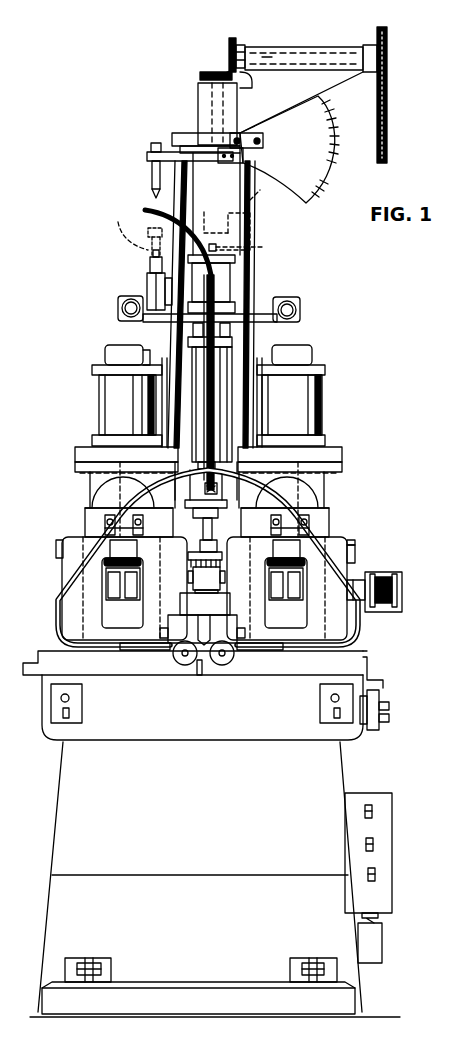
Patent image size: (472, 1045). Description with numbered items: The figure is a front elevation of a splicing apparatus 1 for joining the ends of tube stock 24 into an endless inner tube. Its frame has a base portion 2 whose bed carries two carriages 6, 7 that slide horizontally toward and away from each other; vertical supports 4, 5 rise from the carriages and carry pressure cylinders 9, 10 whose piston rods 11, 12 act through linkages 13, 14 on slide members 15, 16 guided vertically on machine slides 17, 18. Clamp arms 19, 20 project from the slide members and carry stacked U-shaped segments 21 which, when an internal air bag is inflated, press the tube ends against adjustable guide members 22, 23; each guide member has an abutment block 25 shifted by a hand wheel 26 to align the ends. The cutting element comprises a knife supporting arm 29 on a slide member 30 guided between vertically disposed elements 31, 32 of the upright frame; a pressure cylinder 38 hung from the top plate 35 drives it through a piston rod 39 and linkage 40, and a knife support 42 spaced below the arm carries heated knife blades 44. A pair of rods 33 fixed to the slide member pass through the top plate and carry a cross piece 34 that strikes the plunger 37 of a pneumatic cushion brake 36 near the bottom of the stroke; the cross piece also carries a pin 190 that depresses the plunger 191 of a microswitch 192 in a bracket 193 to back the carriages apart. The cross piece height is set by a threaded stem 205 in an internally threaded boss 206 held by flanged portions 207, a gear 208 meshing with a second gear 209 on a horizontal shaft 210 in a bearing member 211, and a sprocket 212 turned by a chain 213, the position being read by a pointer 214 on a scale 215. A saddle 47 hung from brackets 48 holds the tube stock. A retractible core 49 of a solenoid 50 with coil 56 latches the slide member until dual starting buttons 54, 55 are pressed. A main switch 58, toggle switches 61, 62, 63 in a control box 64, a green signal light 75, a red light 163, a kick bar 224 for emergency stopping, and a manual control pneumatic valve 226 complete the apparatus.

The splicing apparatus 1 is at (357, 766).
The base portion 2 is at (356, 981).
The vertical support 4 is at (324, 483).
The vertical support 5 is at (90, 483).
The carriage 6 is at (364, 657).
The carriage 7 is at (40, 652).
The pressure cylinder 9 is at (325, 395).
The pressure cylinder 10 is at (99, 392).
The piston rod 11 is at (300, 500).
The piston rod 12 is at (110, 501).
The linkage 13 is at (310, 522).
The linkage 14 is at (105, 522).
The slide member 15 is at (352, 560).
The slide member 16 is at (62, 569).
The machine slide 17 is at (335, 537).
The machine slide 18 is at (78, 537).
The clamp arm 19 is at (230, 597).
The clamp arm 20 is at (178, 596).
The segments 21 is at (202, 616).
The guide member 22 is at (234, 656).
The guide member 23 is at (176, 650).
The tube stock 24 is at (58, 608).
The abutment block 25 is at (140, 650).
The hand wheel 26 is at (185, 656).
The knife supporting arm 29 is at (222, 556).
The slide member 30 is at (250, 352).
The vertically disposed element 31 is at (272, 352).
The vertically disposed element 32 is at (148, 350).
The vertically extending rods 33 is at (252, 232).
The cross piece 34 is at (147, 156).
The top plate 35 is at (262, 314).
The pneumatic cushion brake 36 is at (228, 282).
The plunger 37 is at (265, 247).
The pressure cylinder 38 is at (218, 396).
The piston rod 39 is at (196, 508).
The linkage 40 is at (214, 515).
The knife support 42 is at (193, 575).
The knife blades 44 is at (195, 591).
The saddle 47 is at (265, 482).
The brackets 48 is at (168, 432).
The retractible core 49 is at (362, 582).
The solenoid 50 is at (398, 573).
The starting button 54 is at (332, 700).
The starting button 55 is at (70, 699).
The coil 56 is at (397, 582).
The double pole main switch 58 is at (382, 938).
The toggle switch 61 is at (365, 814).
The toggle switch 62 is at (366, 848).
The toggle switch 63 is at (368, 878).
The control box 64 is at (378, 826).
The green signal light 75 is at (300, 305).
The red light 163 is at (120, 304).
The pin 190 is at (152, 176).
The plunger 191 is at (150, 265).
The microswitch 192 is at (147, 278).
The bracket 193 is at (168, 315).
The threaded stem 205 is at (222, 160).
The internally threaded boss 206 is at (198, 98).
The flanged portions 207 is at (190, 133).
The gear 208 is at (210, 70).
The second gear 209 is at (232, 38).
The horizontal shaft 210 is at (277, 56).
The bearing member 211 is at (313, 52).
The sprocket 212 is at (377, 68).
The chain 213 is at (387, 118).
The pointer 214 is at (310, 160).
The scale 215 is at (270, 143).
The kick bar 224 is at (192, 996).
The manual control pneumatic valve 226 is at (389, 722).